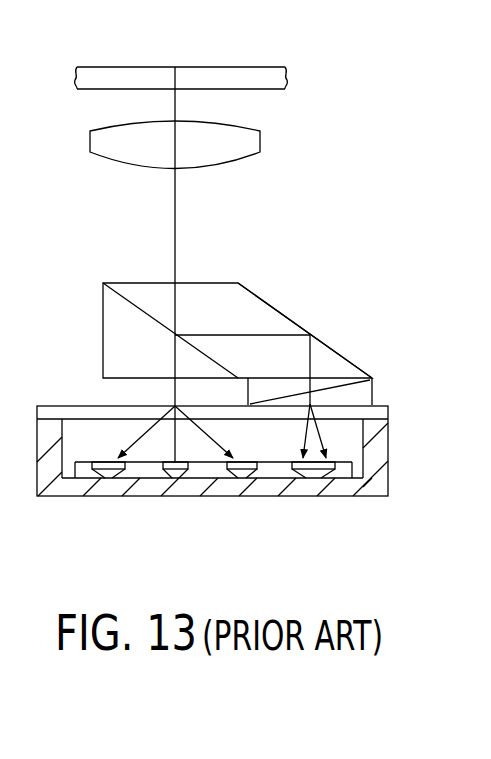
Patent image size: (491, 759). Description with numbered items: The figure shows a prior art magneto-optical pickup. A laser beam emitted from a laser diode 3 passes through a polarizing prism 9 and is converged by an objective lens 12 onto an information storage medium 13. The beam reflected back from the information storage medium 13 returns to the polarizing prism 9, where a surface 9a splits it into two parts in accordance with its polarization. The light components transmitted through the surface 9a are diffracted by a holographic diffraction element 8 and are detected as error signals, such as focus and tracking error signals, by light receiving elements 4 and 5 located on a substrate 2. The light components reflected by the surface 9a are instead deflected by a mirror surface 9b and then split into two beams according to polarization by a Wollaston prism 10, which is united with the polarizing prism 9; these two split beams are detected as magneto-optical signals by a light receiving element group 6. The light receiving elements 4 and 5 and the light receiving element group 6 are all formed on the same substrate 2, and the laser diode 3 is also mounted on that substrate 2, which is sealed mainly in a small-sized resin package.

The substrate 2 is at (348, 472).
The laser diode 3 is at (174, 469).
The light receiving element 4 is at (107, 469).
The light receiving element 5 is at (241, 469).
The light receiving element group 6 is at (316, 469).
The holographic diffraction element 8 is at (162, 405).
The polarizing prism 9 is at (257, 310).
The surface 9a is at (145, 310).
The mirror surface 9b is at (337, 338).
The Wollaston prism 10 is at (362, 390).
The objective lens 12 is at (114, 161).
The information storage medium 13 is at (274, 90).